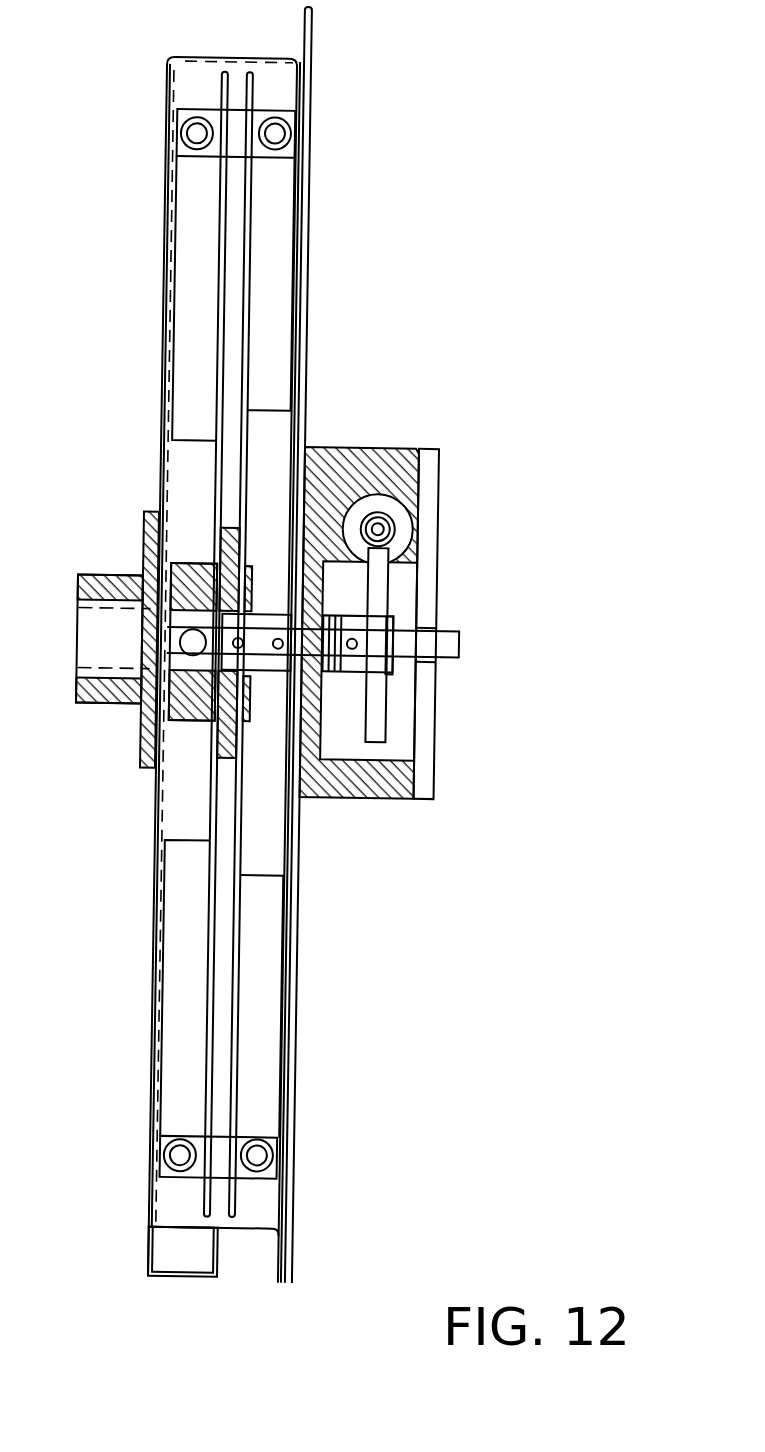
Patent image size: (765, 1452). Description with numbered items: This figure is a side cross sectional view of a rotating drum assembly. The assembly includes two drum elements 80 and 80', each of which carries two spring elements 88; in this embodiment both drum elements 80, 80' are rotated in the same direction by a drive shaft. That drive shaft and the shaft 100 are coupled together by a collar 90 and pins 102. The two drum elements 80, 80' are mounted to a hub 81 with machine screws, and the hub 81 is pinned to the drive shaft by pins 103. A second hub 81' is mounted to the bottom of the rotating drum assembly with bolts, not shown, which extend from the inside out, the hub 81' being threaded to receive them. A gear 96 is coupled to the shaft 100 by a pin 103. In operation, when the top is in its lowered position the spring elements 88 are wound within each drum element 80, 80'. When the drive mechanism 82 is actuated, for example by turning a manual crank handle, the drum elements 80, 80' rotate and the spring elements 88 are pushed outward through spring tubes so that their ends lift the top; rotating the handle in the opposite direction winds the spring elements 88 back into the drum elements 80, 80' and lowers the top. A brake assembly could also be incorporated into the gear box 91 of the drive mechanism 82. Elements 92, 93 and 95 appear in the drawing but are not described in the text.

The drum element 80 is at (369, 646).
The drum element 80' is at (173, 669).
The hub 81 is at (263, 699).
The hub 81' is at (113, 656).
The drive mechanism 82 is at (395, 434).
The spring elements 88 is at (182, 149).
The collar 90 is at (262, 606).
The gear box 91 is at (412, 798).
The roller 92 is at (411, 508).
The bushing block 93 is at (350, 671).
The bearing 95 is at (415, 528).
The gear 96 is at (382, 592).
The shaft 100 is at (380, 649).
The pins 102 is at (279, 674).
The pins 103 is at (185, 652).